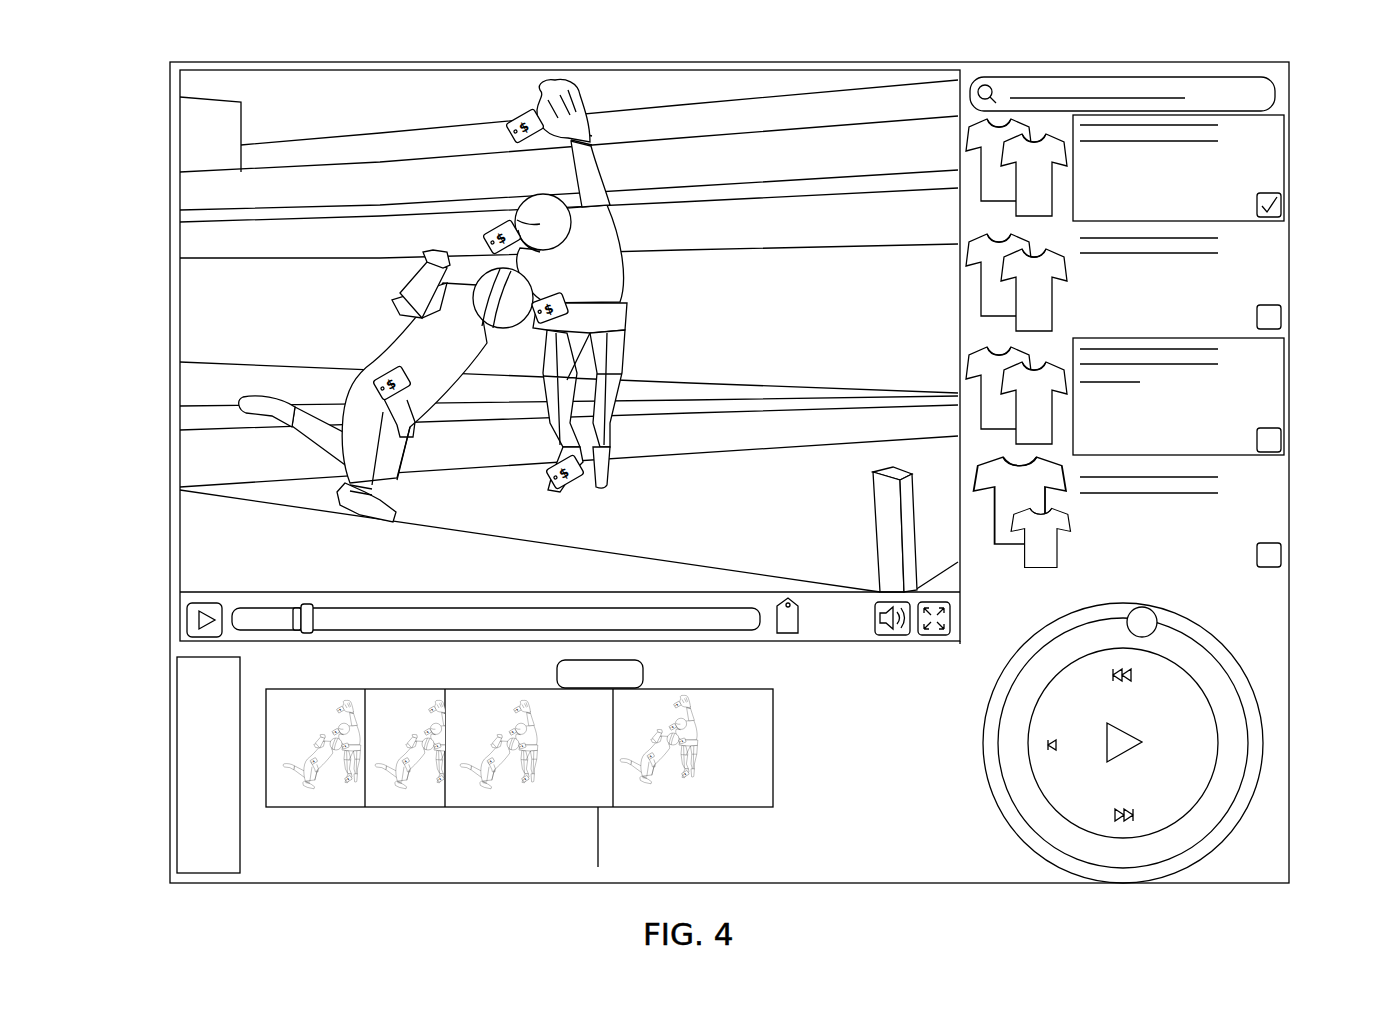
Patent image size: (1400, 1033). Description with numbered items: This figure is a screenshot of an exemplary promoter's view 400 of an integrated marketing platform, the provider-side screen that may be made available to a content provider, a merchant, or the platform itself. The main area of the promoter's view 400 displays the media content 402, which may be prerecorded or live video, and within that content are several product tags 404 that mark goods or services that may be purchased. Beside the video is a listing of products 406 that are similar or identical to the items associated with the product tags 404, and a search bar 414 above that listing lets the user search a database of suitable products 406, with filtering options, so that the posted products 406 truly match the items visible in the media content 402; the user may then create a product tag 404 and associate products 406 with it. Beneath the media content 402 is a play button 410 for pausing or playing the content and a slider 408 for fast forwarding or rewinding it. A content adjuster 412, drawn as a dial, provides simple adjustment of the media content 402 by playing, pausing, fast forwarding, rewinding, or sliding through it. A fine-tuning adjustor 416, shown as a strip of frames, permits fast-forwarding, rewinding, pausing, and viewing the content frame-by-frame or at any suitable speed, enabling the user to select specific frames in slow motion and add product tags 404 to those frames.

The promoter's view 400 is at (156, 71).
The media content 402 is at (903, 81).
The product tags 404 is at (513, 118).
The products 406 is at (1268, 168).
The slider 408 is at (352, 626).
The play button 410 is at (193, 620).
The content adjuster 412 is at (1183, 743).
The search bar 414 is at (1280, 104).
The fine-tuning adjustor 416 is at (498, 793).